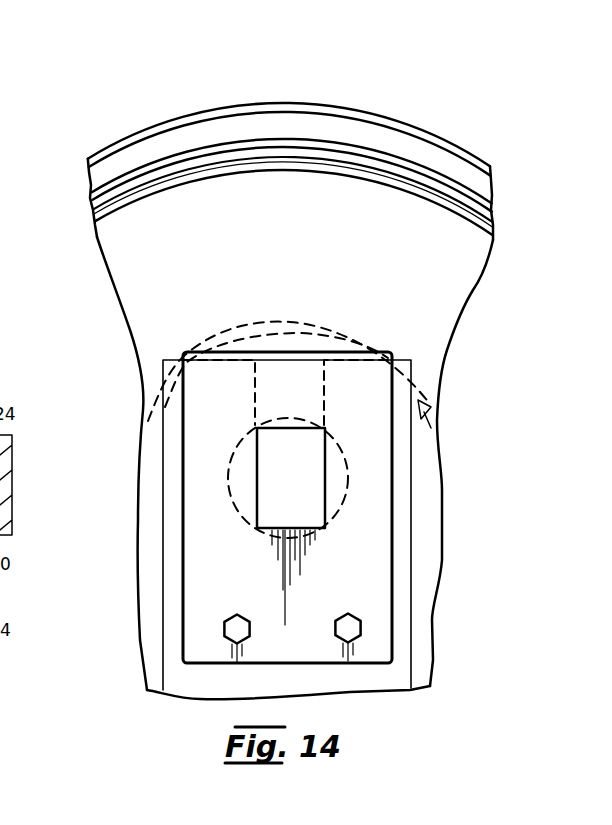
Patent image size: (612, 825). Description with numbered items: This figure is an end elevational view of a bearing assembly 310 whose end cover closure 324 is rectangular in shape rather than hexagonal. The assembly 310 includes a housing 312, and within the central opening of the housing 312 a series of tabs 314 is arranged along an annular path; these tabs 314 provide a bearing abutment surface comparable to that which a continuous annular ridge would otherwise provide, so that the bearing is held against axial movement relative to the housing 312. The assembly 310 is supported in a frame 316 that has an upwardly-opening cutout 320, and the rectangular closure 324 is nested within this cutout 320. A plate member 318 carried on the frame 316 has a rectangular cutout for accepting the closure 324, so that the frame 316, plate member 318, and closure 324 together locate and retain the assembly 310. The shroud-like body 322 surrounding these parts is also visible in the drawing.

The bearing assembly 310 is at (405, 115).
The housing 312 is at (86, 186).
The tabs 314 is at (146, 419).
The frame 316 is at (402, 567).
The plate member 318 is at (364, 346).
The upwardly-opening cutout 320 is at (318, 522).
The shroud body 322 is at (124, 323).
The end cover closure 324 is at (284, 428).